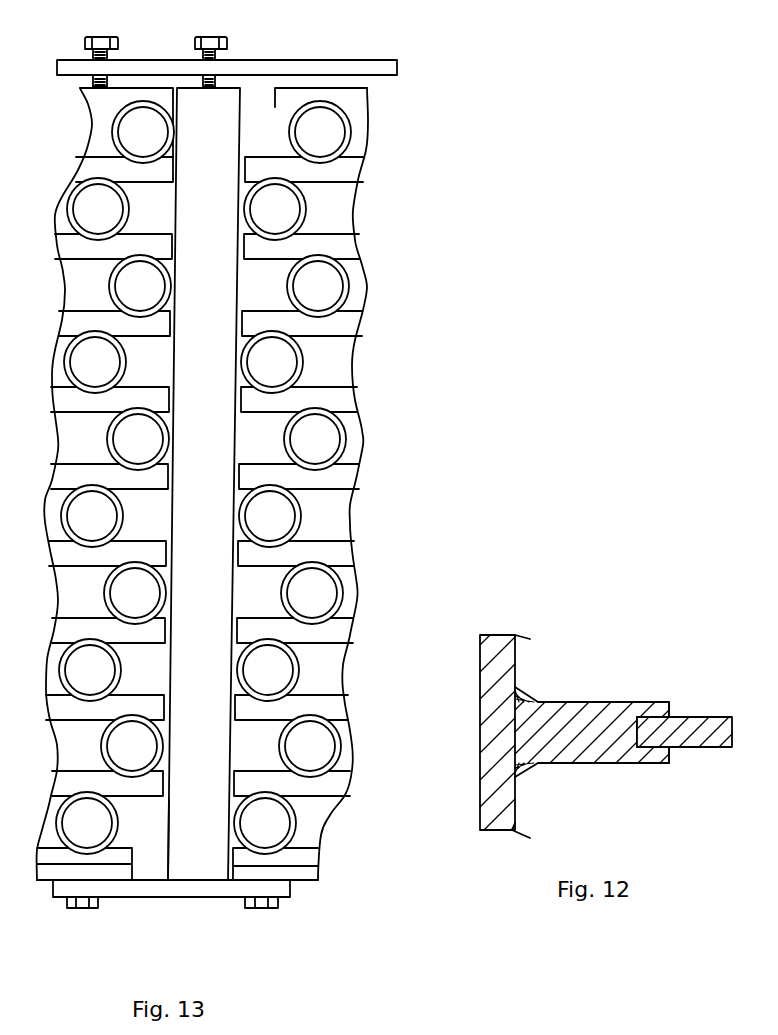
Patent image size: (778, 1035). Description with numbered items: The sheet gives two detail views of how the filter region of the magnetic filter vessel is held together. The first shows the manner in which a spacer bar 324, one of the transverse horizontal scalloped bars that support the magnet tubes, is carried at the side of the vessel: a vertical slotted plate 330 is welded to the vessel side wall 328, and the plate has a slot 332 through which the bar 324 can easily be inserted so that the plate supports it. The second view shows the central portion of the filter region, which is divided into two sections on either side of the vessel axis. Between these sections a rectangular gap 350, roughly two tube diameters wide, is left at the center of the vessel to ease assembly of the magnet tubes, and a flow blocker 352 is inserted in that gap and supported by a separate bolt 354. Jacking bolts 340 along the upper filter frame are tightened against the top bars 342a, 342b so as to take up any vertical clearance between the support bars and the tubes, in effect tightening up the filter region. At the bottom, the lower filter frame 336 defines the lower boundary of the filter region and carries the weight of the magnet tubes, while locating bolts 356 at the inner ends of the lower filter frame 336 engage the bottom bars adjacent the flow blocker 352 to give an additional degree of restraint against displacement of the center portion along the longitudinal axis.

In FIG. 12, the spacer bar 324 is at (683, 717).
In FIG. 12, the vessel side wall 328 is at (480, 668).
In FIG. 12, the slotted plate 330 is at (562, 700).
In FIG. 12, the slot 332 is at (637, 725).
In FIG. 13, the lower filter frame 336 is at (372, 72).
In FIG. 13, the jacking bolt 340 is at (103, 37).
In FIG. 13, the top bar 342a is at (92, 126).
In FIG. 13, the top bar 342b is at (357, 100).
In FIG. 13, the rectangular gap 350 is at (168, 805).
In FIG. 13, the flow blocker 352 is at (217, 115).
In FIG. 13, the bolt 354 is at (212, 37).
In FIG. 13, the locating bolt 356 is at (93, 908).